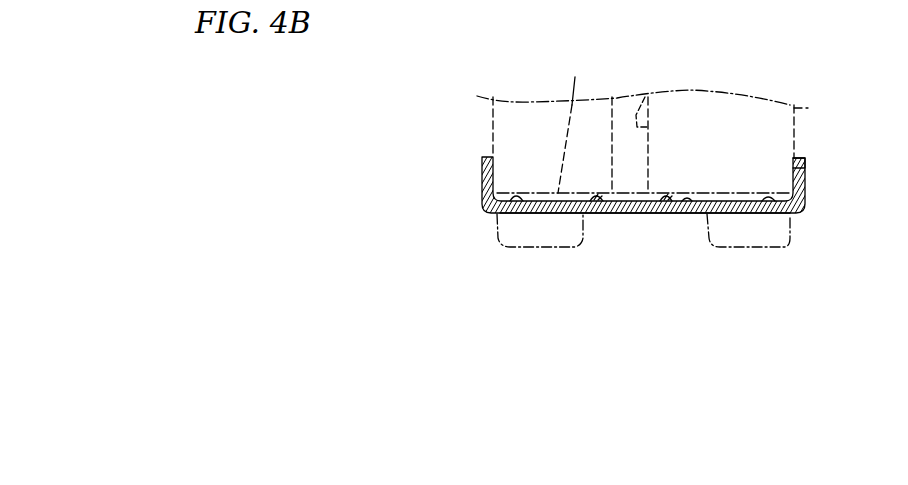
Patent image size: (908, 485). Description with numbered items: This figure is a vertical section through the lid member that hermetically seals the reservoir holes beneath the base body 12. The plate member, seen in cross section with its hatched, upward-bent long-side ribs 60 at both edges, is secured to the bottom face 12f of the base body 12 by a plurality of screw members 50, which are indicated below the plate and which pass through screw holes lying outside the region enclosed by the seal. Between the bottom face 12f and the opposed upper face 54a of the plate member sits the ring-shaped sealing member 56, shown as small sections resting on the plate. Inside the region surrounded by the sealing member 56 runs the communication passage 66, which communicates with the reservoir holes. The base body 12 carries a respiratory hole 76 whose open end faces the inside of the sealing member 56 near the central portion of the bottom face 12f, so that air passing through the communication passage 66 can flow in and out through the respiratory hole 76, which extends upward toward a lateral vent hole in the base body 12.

The base body 12 is at (808, 130).
The bottom face of the base body 12f is at (585, 123).
The respiratory hole 76 is at (648, 97).
The long-side ribs 60 is at (483, 183).
The ring-shaped sealing member 56 is at (593, 212).
The communication passage 66 is at (627, 212).
The upper face of the plate member 54a is at (692, 213).
The screw members 50 is at (500, 243).